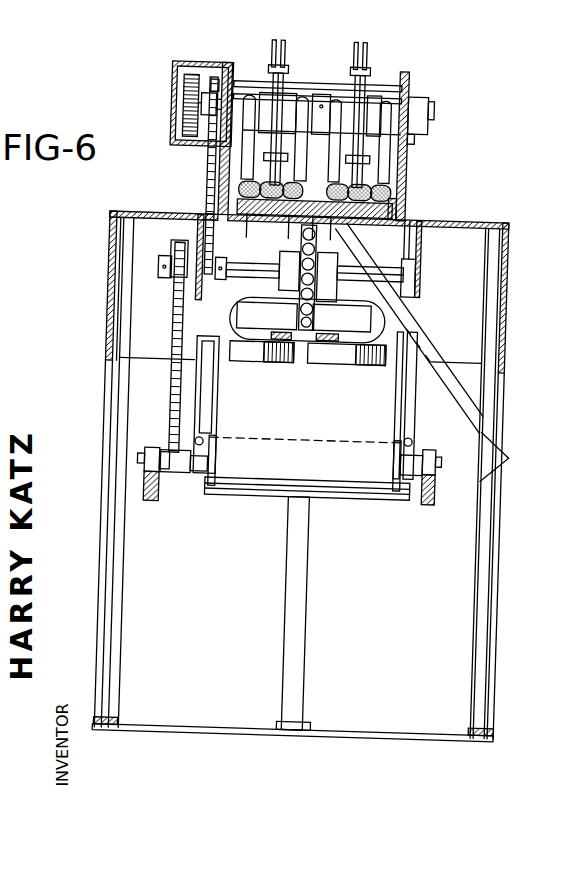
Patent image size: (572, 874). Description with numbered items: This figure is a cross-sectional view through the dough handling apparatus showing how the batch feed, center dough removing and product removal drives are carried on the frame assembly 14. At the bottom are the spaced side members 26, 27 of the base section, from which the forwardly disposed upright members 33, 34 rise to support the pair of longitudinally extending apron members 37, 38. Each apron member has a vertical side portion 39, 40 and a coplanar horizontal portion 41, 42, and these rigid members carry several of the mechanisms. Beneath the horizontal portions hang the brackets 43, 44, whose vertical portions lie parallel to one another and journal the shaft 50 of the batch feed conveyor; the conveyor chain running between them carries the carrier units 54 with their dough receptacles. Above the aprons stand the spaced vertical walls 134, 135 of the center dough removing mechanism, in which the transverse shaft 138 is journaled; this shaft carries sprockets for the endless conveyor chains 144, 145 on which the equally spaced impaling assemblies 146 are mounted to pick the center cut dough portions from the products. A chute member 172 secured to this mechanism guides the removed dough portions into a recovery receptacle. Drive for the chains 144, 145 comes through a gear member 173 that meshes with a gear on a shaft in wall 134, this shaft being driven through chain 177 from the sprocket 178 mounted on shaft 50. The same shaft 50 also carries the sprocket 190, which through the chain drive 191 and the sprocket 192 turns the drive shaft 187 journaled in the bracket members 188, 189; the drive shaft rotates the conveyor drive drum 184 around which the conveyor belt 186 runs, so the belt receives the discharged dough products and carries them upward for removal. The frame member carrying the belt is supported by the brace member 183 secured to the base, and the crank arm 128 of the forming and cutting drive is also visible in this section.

The frame 14 is at (562, 645).
The side member 26 is at (120, 727).
The side member 27 is at (515, 723).
The forwardly disposed upright member 33 is at (135, 569).
The forwardly disposed upright member 34 is at (506, 544).
The apron member 37 is at (104, 308).
The apron member 38 is at (522, 299).
The vertical side portion 39 is at (109, 262).
The vertical side portion 40 is at (520, 262).
The horizontal portion 41 is at (148, 211).
The horizontal portion 42 is at (470, 210).
The hanger bracket 43 is at (435, 251).
The hanger bracket 44 is at (197, 233).
The shaft 50 is at (250, 264).
The carrier unit 54 is at (340, 364).
The crank arm 128 is at (410, 727).
The vertical wall 134 is at (228, 58).
The vertical wall 135 is at (408, 63).
The shaft 138 is at (313, 94).
The endless conveyor chain 144 is at (260, 64).
The endless conveyor chain 145 is at (370, 62).
The impaling assembly 146 is at (350, 37).
The chute member 172 is at (424, 336).
The gear member 173 is at (179, 123).
The chain 177 is at (210, 157).
The sprocket 178 is at (213, 297).
The brace member 183 is at (321, 579).
The conveyor drive drum 184 is at (224, 496).
The conveyor belt 186 is at (292, 413).
The drive shaft 187 is at (419, 483).
The bracket member 188 is at (160, 498).
The bracket member 189 is at (444, 495).
The sprocket 190 is at (185, 281).
The chain drive 191 is at (185, 373).
The sprocket 192 is at (166, 440).